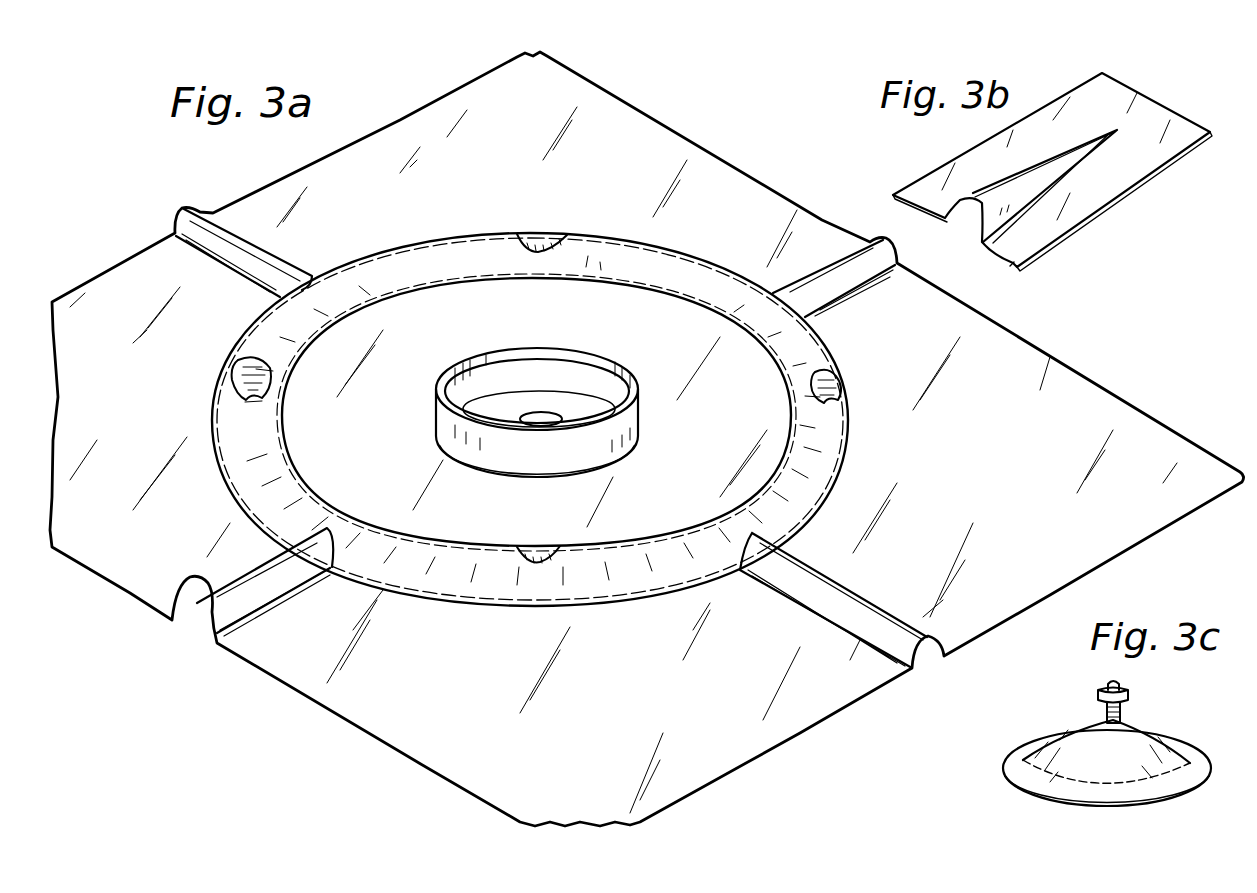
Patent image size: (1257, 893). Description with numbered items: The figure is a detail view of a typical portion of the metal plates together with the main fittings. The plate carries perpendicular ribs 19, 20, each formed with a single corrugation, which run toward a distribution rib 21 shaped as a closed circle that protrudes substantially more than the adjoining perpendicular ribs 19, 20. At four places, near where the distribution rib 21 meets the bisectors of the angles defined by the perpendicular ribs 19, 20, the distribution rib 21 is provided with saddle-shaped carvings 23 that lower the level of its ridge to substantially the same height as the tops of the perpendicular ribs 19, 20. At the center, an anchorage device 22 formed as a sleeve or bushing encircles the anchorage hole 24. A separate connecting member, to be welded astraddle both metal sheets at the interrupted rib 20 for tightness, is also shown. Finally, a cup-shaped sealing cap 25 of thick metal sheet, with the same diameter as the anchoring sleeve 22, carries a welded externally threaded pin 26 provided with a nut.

In FIG. 3A, the perpendicular rib 19 is at (233, 240).
In FIG. 3A, the perpendicular rib 20 is at (823, 280).
In FIG. 3A, the distribution rib 21 is at (385, 260).
In FIG. 3A, the anchorage device 22 is at (520, 355).
In FIG. 3A, the saddle-shaped carving 23 is at (533, 240).
In FIG. 3A, the anchorage hole 24 is at (543, 415).
In FIG. 3C, the sealing cap 25 is at (1070, 740).
In FIG. 3C, the externally threaded pin 26 is at (1133, 692).